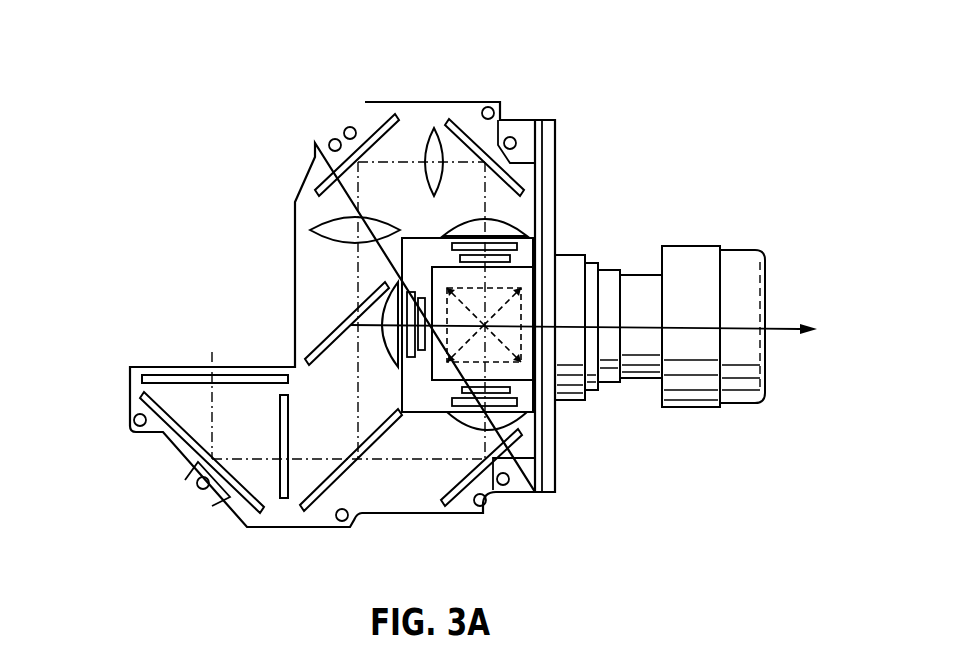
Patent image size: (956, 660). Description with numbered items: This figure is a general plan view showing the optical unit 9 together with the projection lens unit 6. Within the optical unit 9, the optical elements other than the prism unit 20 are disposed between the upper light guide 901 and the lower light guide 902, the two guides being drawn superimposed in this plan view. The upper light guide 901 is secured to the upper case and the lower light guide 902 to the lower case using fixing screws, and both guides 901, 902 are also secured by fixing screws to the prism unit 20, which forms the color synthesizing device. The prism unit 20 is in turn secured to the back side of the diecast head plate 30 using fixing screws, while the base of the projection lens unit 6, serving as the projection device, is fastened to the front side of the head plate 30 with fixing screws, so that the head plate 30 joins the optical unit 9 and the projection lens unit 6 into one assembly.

The optical unit 9 is at (443, 85).
The upper light guide 901 is at (285, 272).
The lower light guide 902 is at (332, 314).
The prism unit 20 is at (515, 278).
The head plate 30 is at (548, 437).
The projection lens unit 6 is at (746, 245).